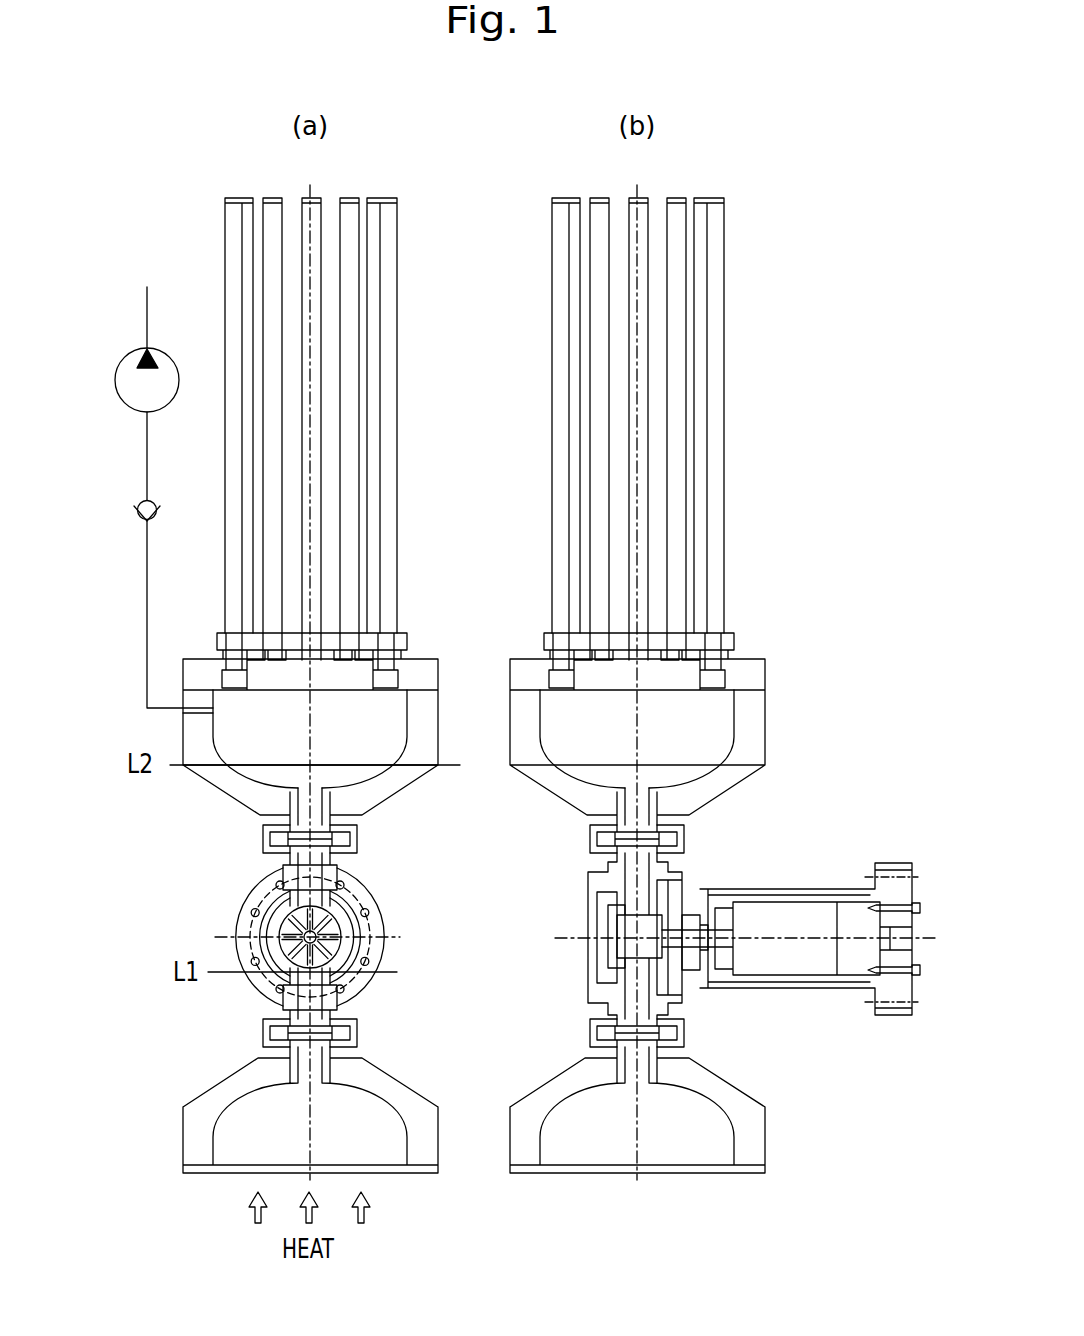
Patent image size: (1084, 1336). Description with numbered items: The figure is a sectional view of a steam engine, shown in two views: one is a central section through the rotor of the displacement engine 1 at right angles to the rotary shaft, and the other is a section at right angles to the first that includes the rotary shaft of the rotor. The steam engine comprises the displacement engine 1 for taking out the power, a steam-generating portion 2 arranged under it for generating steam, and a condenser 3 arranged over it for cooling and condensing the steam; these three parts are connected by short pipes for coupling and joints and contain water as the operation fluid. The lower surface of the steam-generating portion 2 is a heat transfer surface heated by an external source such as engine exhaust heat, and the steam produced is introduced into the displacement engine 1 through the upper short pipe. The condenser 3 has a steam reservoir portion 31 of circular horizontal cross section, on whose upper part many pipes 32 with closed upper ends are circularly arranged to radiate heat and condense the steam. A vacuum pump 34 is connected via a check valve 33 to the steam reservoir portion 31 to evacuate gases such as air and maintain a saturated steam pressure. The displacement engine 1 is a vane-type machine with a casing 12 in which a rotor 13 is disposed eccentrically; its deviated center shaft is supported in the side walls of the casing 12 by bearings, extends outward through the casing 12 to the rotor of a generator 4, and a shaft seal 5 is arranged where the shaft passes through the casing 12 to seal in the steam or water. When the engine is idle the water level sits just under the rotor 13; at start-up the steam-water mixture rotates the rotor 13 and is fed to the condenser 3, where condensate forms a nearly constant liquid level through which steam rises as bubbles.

The displacement engine 1 is at (388, 925).
The steam-generating portion 2 is at (399, 1079).
The condenser 3 is at (440, 690).
The generator 4 is at (770, 888).
The shaft seal 5 is at (687, 955).
The casing 12 is at (340, 903).
The rotor 13 is at (282, 918).
The steam reservoir portion 31 is at (367, 750).
The pipes 32 is at (397, 514).
The check valve 33 is at (133, 511).
The vacuum pump 34 is at (118, 367).